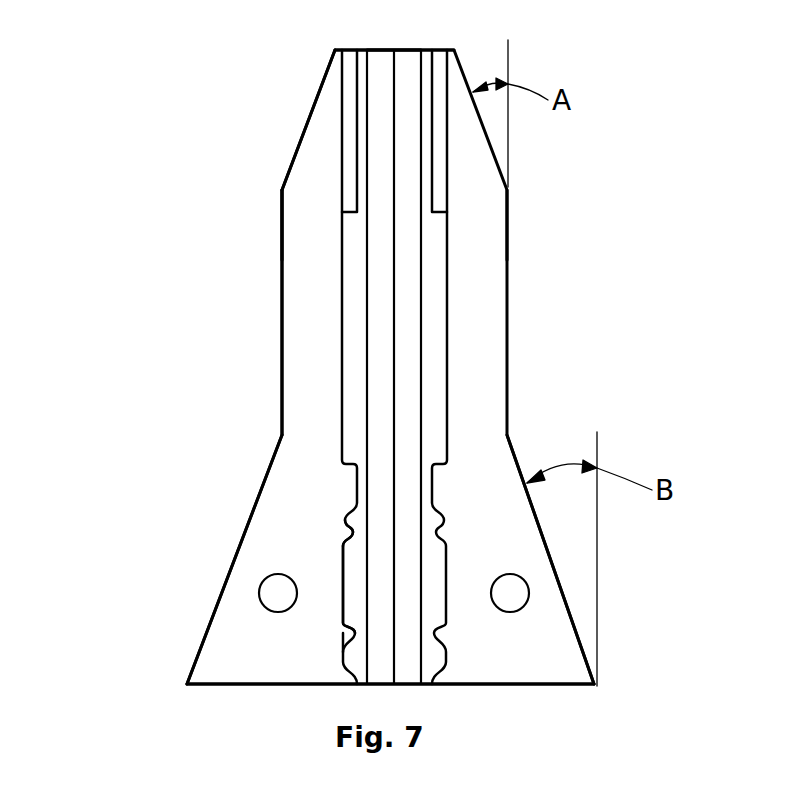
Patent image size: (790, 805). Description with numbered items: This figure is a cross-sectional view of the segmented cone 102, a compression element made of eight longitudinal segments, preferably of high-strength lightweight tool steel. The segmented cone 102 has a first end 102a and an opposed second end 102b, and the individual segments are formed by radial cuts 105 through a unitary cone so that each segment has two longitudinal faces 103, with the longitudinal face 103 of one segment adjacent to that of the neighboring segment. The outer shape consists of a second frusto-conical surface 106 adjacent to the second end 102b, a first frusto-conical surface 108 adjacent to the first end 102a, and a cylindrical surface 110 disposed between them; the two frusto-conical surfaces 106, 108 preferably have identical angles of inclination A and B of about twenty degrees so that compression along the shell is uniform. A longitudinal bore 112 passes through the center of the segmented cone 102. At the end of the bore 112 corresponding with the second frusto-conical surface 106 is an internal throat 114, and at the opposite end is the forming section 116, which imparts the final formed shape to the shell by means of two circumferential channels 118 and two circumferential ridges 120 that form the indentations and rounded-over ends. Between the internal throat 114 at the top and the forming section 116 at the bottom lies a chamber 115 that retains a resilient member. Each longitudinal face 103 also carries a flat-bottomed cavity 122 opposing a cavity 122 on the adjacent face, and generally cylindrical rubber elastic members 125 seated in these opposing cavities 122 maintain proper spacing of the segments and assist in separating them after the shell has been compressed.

The segmented cone 102 is at (517, 288).
The first end 102a is at (537, 670).
The second end 102b is at (363, 50).
The longitudinal face 103 is at (300, 215).
The radial cuts 105 is at (367, 50).
The second frusto-conical surface 106 is at (307, 123).
The first frusto-conical surface 108 is at (192, 668).
The cylindrical surface 110 is at (280, 308).
The longitudinal bore 112 is at (408, 332).
The internal throat 114 is at (438, 118).
The chamber 115 is at (353, 275).
The forming section 116 is at (430, 578).
The circumferential channels 118 is at (348, 517).
The circumferential ridges 120 is at (353, 533).
The cavity 122 is at (529, 595).
The elastic members 125 is at (278, 592).